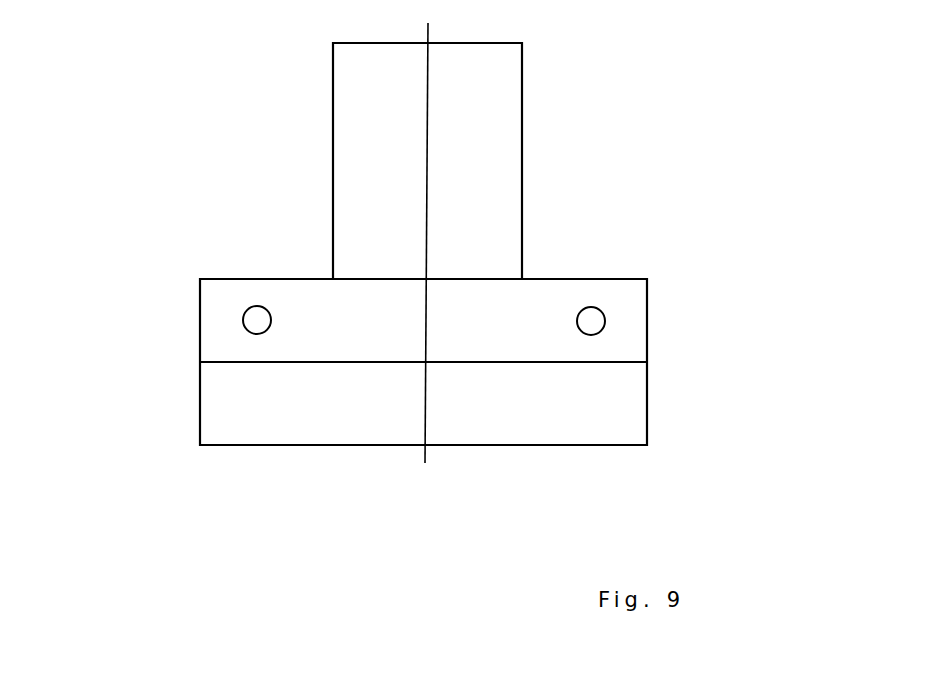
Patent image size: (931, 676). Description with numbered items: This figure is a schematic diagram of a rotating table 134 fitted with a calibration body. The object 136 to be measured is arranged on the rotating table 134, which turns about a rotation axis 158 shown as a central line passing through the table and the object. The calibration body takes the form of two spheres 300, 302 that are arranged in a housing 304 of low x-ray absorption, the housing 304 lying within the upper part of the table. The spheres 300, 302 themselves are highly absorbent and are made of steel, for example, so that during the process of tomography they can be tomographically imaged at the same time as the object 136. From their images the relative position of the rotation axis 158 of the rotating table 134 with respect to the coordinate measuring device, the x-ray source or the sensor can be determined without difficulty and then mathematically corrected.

The rotating table 134 is at (628, 405).
The object 136 is at (348, 145).
The rotation axis 158 is at (426, 462).
The sphere 300 is at (255, 306).
The sphere 302 is at (594, 307).
The housing 304 is at (628, 322).